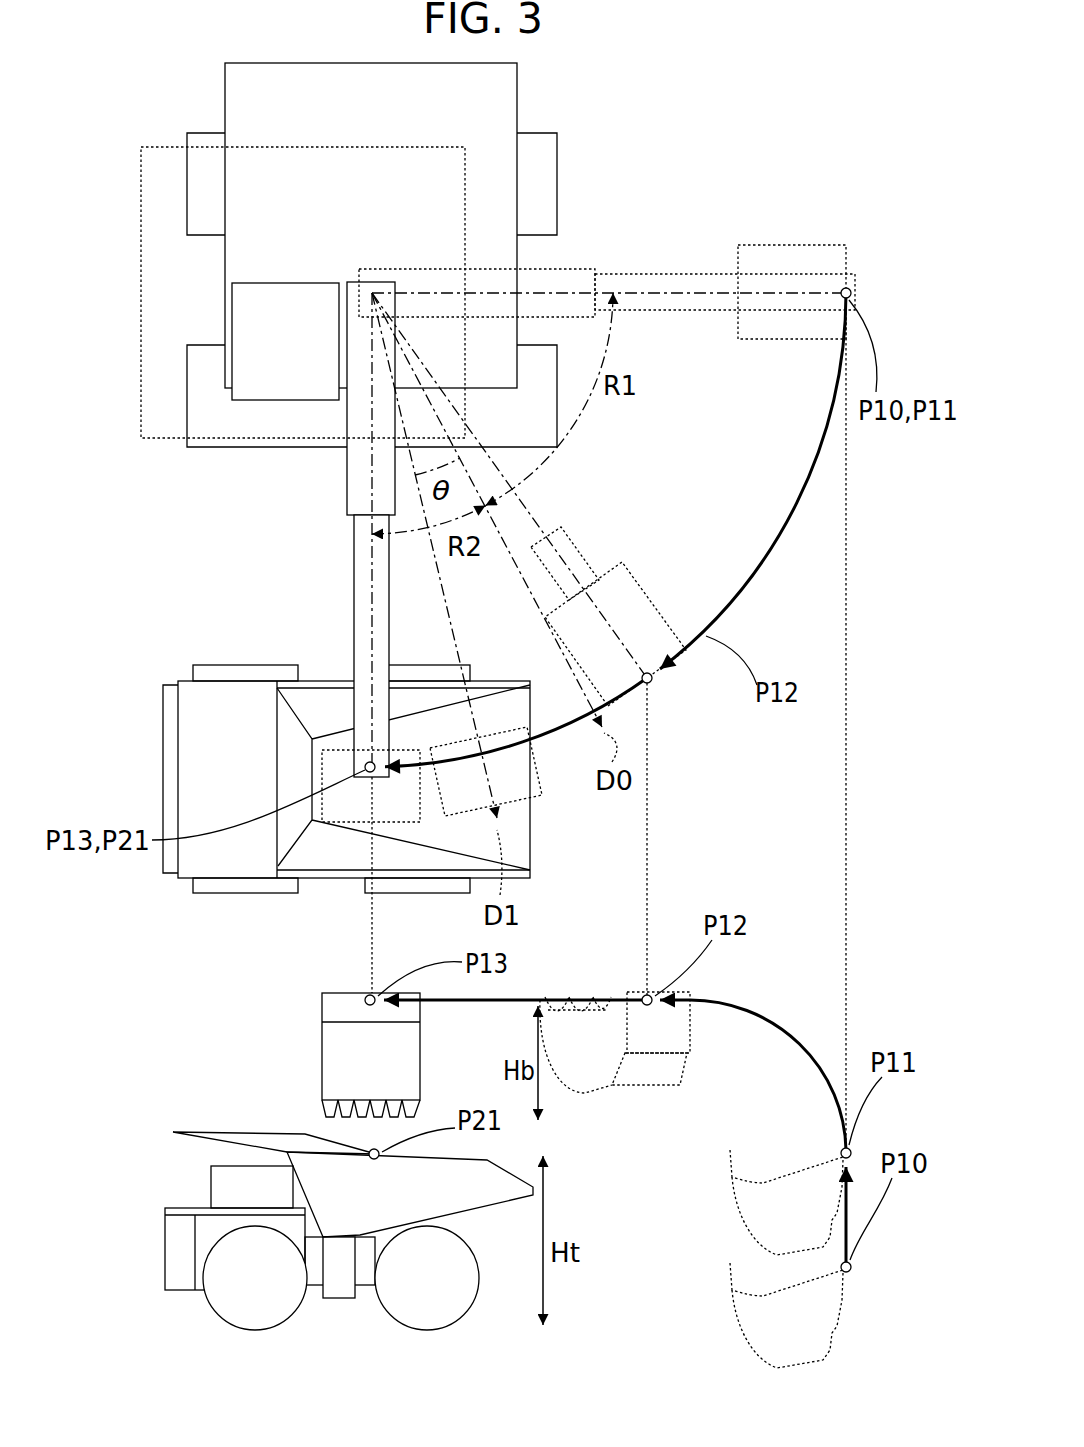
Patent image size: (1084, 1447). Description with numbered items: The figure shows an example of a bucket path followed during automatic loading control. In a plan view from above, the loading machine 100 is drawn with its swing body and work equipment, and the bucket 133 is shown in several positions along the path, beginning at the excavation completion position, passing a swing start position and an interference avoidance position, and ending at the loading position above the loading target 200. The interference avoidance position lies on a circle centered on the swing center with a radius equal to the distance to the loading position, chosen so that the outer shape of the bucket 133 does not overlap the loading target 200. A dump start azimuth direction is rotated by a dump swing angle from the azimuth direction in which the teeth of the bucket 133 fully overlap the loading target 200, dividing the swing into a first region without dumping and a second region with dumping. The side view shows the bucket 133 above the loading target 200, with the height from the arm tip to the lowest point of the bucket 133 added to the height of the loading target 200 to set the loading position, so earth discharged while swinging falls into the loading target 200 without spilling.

The loading machine 100 is at (117, 131).
The bucket 133 is at (807, 245).
The loading target 200 is at (168, 689).